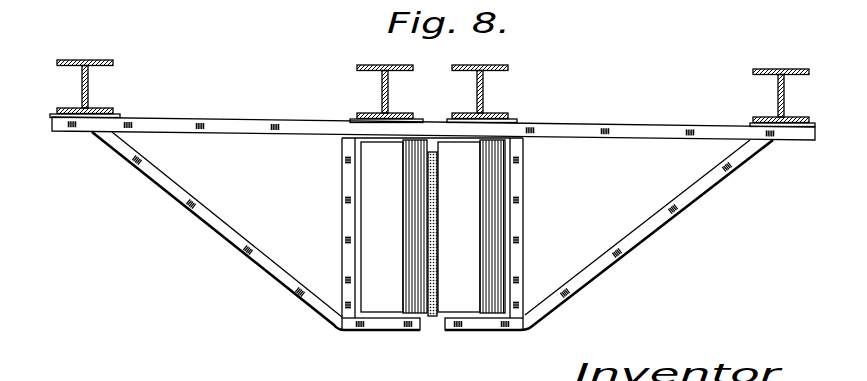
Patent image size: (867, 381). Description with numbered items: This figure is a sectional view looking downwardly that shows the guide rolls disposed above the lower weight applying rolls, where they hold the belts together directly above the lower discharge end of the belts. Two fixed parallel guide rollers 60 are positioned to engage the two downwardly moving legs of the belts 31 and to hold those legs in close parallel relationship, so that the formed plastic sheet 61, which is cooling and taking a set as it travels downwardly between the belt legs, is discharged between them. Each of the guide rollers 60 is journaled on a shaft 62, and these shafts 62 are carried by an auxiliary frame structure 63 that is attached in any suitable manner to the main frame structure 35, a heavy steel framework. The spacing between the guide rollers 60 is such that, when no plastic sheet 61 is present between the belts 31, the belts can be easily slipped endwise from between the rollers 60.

The belts 31 is at (428, 208).
The main frame structure 35 is at (485, 98).
The guide rollers 60 is at (385, 295).
The plastic sheet 61 is at (433, 152).
The shafts 62 is at (467, 315).
The auxiliary frame structure 63 is at (630, 243).